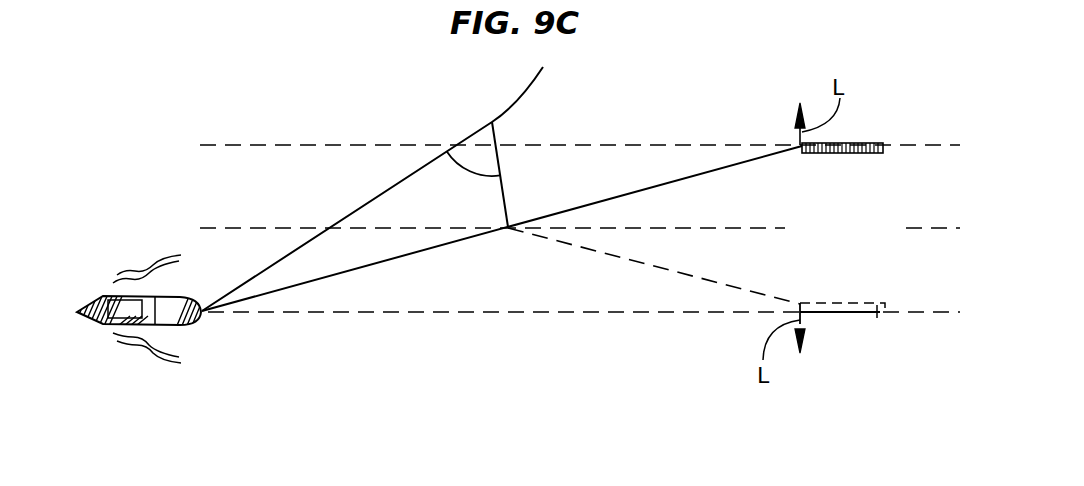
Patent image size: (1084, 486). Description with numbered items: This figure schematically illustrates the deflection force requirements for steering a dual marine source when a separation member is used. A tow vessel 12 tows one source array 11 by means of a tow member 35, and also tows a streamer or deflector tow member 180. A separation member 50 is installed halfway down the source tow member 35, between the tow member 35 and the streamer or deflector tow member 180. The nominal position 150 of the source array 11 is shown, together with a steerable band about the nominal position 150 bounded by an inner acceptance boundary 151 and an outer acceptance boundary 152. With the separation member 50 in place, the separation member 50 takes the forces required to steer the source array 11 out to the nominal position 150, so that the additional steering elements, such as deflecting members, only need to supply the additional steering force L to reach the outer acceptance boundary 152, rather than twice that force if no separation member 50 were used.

The source array 11 is at (872, 143).
The tow vessel 12 is at (88, 302).
The tow member 35 is at (342, 275).
The separation member 50 is at (447, 152).
The nominal position 150 is at (693, 228).
The inner acceptance boundary 151 is at (683, 313).
The outer acceptance boundary 152 is at (760, 143).
The streamer or deflector tow member 180 is at (382, 193).